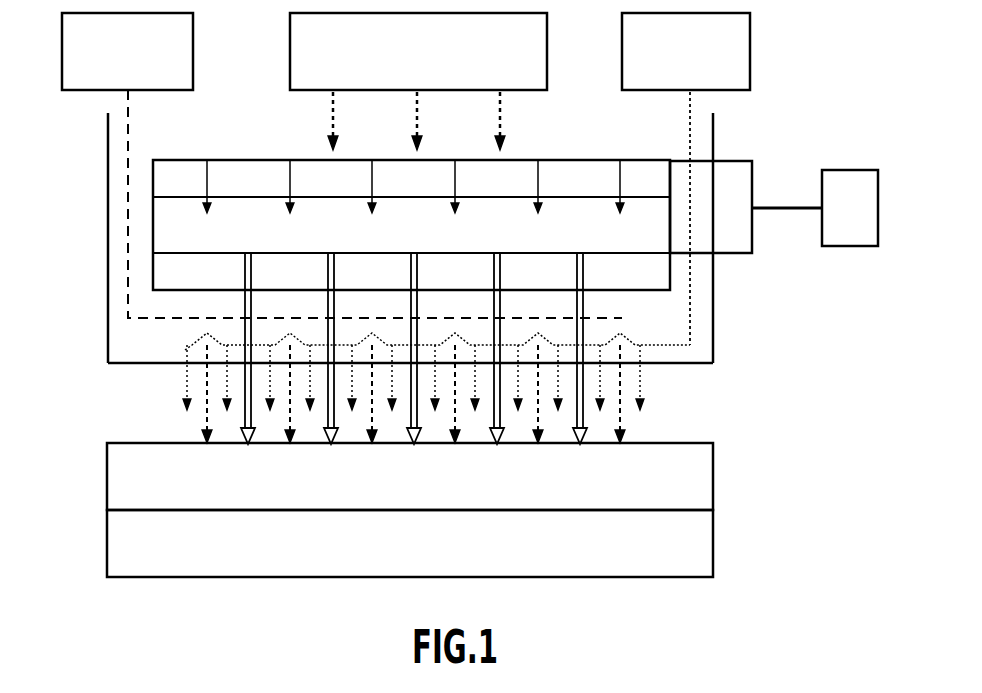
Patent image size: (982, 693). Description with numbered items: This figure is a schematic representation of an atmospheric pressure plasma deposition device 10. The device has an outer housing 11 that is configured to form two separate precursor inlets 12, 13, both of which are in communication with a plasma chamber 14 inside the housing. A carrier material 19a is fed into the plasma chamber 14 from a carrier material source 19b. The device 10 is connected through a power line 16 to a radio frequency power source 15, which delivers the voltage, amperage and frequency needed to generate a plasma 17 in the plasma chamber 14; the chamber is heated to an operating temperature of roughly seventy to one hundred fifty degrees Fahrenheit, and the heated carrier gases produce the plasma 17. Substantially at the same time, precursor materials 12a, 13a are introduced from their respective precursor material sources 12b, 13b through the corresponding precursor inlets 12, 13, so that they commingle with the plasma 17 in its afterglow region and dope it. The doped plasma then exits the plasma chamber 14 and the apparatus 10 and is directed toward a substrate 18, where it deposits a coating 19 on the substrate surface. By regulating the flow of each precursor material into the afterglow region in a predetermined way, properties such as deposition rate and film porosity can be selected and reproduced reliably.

The atmospheric pressure plasma deposition device 10 is at (76, 278).
The outer housing 11 is at (108, 327).
The precursor inlet 12 is at (108, 221).
The precursor material 12a is at (130, 136).
The precursor material source 12b is at (145, 68).
The precursor inlet 13 is at (703, 120).
The precursor material 13a is at (685, 103).
The precursor material source 13b is at (704, 68).
The plasma chamber 14 is at (250, 158).
The radio frequency power source 15 is at (858, 168).
The power line 16 is at (765, 207).
The plasma 17 is at (505, 241).
The substrate 18 is at (107, 540).
The coating 19 is at (107, 462).
The carrier material 19a is at (512, 112).
The carrier material source 19b is at (436, 68).